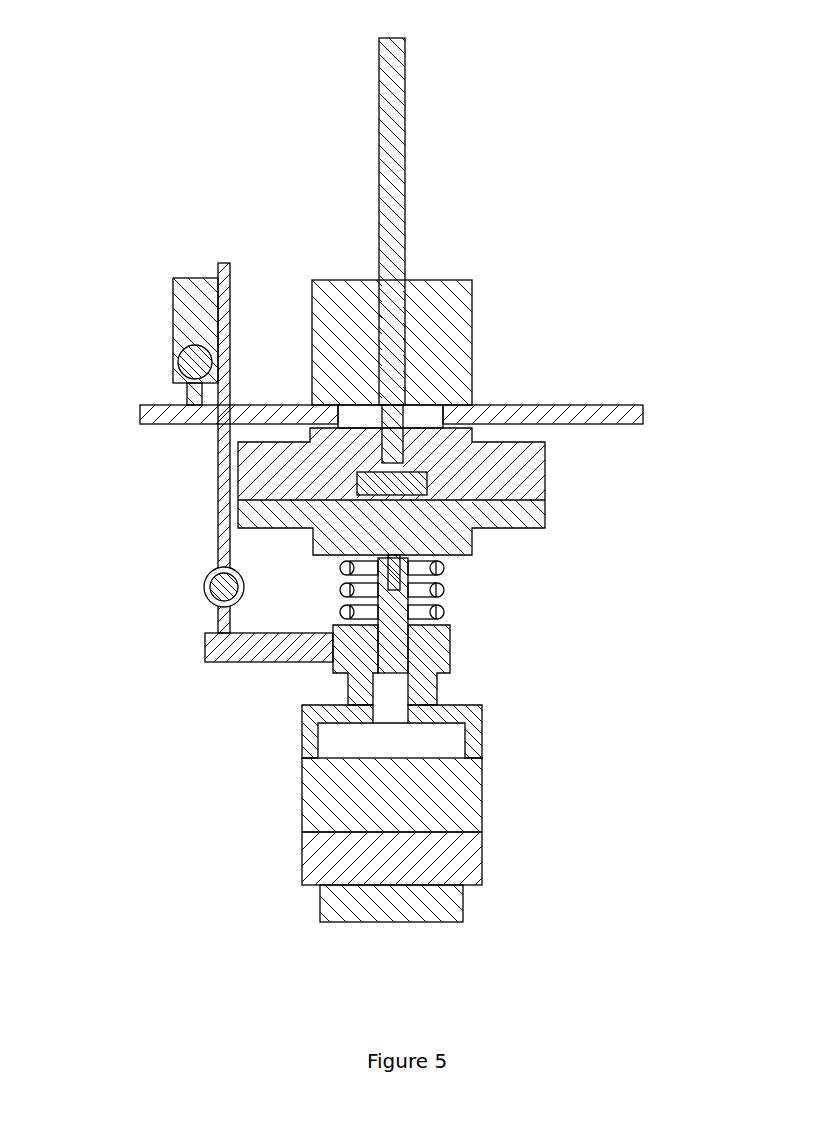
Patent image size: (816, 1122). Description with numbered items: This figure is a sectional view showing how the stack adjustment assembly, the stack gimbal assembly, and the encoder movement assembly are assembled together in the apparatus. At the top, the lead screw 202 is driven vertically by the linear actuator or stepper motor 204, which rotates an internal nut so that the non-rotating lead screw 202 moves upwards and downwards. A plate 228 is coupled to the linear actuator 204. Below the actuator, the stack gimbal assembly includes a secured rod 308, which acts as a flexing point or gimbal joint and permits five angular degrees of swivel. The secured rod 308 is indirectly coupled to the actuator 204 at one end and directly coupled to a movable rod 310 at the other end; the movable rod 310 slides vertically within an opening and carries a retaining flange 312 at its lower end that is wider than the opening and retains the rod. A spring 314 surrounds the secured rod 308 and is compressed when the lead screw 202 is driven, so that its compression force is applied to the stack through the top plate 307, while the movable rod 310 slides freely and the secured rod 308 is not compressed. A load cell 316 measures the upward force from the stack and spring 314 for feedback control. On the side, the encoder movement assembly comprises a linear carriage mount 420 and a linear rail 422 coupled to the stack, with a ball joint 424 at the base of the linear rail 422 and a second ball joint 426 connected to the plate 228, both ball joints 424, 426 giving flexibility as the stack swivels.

The lead screw 202 is at (377, 42).
The linear actuator 204 is at (468, 277).
The plate 228 is at (138, 407).
The top plate 307 is at (466, 920).
The secured rod 308 is at (400, 537).
The movable rod 310 is at (412, 632).
The retaining flange 312 is at (394, 679).
The spring 314 is at (446, 572).
The load cell 316 is at (430, 483).
The linear carriage mount 420 is at (174, 275).
The linear rail 422 is at (216, 456).
The ball joint 424 is at (201, 580).
The second ball joint 426 is at (182, 357).